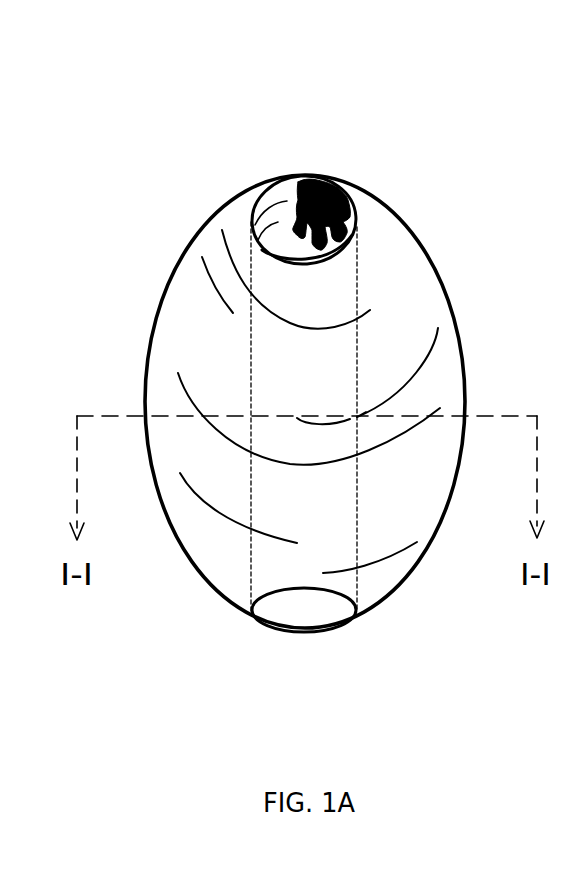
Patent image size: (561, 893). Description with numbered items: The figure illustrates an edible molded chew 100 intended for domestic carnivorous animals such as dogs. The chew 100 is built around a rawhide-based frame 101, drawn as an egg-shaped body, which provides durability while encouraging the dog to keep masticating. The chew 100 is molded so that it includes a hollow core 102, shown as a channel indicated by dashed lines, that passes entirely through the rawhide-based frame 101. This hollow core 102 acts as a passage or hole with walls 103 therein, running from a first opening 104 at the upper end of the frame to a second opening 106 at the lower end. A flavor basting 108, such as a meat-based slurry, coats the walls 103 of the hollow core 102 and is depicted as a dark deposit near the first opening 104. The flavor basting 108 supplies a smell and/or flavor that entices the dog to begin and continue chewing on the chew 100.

The edible molded chew 100 is at (93, 62).
The rawhide-based frame 101 is at (197, 340).
The hollow core 102 is at (357, 342).
The walls 103 is at (283, 213).
The first opening 104 is at (327, 261).
The second opening 106 is at (278, 607).
The flavor basting 108 is at (330, 185).